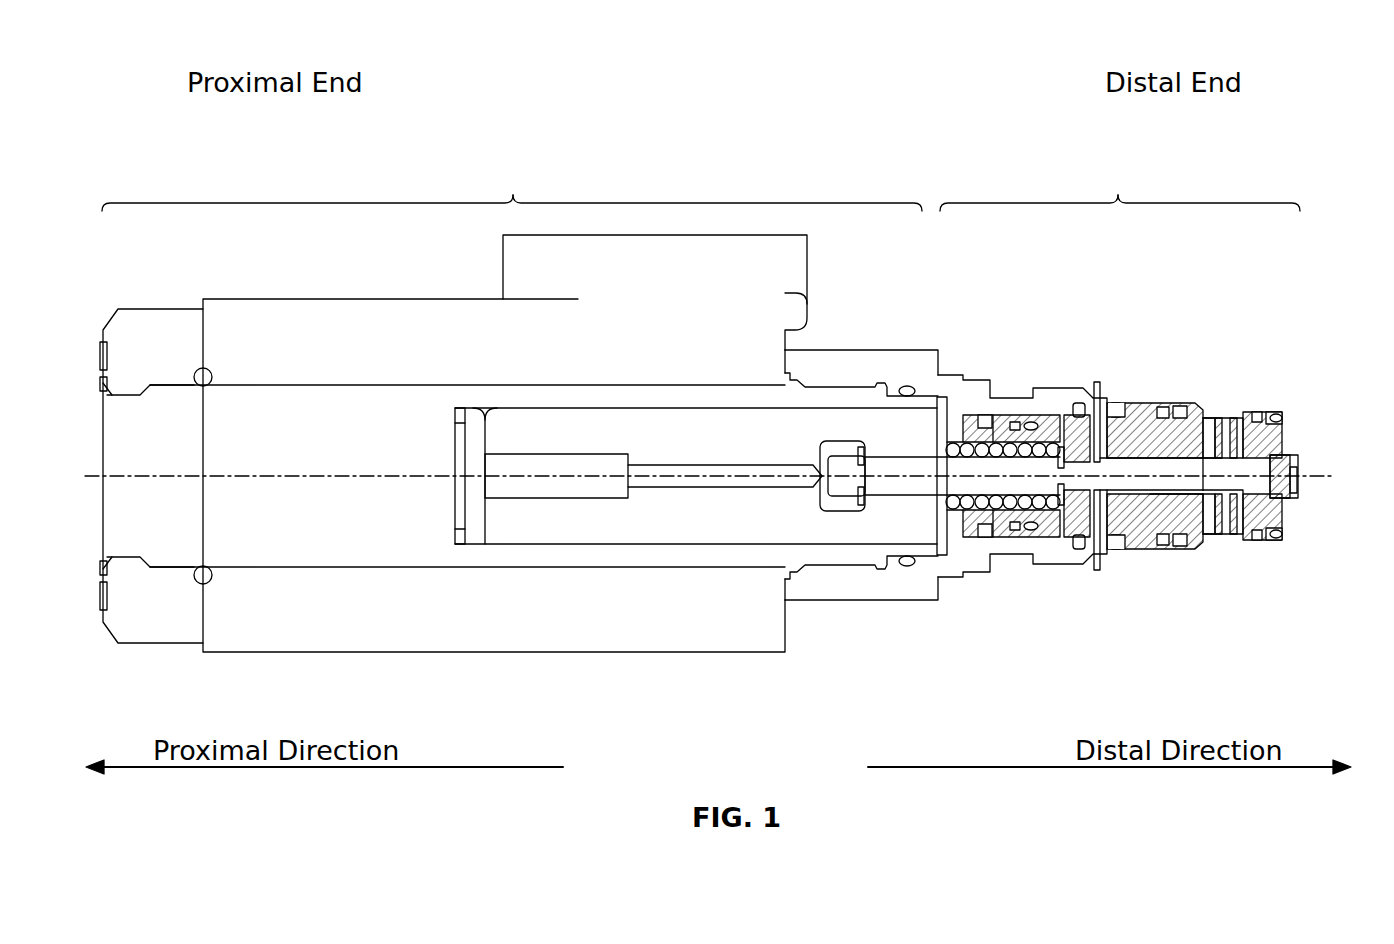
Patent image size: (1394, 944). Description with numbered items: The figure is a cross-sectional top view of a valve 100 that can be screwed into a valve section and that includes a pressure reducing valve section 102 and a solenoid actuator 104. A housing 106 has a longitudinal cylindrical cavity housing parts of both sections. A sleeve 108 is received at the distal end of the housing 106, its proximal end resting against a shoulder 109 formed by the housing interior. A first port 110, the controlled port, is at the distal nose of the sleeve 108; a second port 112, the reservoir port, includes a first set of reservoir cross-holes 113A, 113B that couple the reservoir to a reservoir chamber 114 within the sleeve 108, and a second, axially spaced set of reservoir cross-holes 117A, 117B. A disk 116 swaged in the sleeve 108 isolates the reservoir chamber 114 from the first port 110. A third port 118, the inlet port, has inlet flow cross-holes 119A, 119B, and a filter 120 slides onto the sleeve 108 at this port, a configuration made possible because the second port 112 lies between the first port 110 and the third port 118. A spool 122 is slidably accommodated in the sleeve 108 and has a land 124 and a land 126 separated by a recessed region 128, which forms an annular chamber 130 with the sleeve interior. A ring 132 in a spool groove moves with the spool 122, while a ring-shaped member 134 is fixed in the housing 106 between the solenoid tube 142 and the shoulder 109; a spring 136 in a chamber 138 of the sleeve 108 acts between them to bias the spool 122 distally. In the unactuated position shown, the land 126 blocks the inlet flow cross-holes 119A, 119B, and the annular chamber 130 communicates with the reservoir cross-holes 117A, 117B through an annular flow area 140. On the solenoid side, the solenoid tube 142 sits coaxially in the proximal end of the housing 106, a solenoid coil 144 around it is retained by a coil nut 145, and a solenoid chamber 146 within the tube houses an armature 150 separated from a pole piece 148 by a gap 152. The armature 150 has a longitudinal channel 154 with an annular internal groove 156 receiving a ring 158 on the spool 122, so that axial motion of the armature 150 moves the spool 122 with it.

The valve 100 is at (158, 165).
The pressure reducing valve section 102 is at (1048, 186).
The solenoid actuator 104 is at (455, 186).
The housing 106 is at (904, 349).
The sleeve 108 is at (1155, 402).
The shoulder 109 is at (956, 426).
The first port 110 is at (1304, 484).
The second port 112 is at (1228, 404).
The reservoir cross-hole 113A is at (1256, 410).
The reservoir cross-hole 113B is at (1237, 482).
The reservoir chamber 114 is at (1278, 412).
The disk 116 is at (1294, 464).
The reservoir cross-hole 117A is at (1166, 404).
The reservoir cross-hole 117B is at (1215, 523).
The third port 118 is at (1097, 380).
The inlet flow cross-hole 119A is at (1113, 400).
The inlet flow cross-hole 119B is at (1112, 548).
The filter 120 is at (1078, 548).
The spool 122 is at (1128, 492).
The land 124 is at (1290, 504).
The land 126 is at (1165, 530).
The recessed region 128 is at (1186, 480).
The annular chamber 130 is at (1174, 460).
The ring 132 is at (1060, 446).
The ring-shaped member 134 is at (944, 398).
The spring 136 is at (1010, 506).
The chamber 138 is at (971, 512).
The annular flow area 140 is at (1204, 460).
The solenoid tube 142 is at (826, 392).
The solenoid coil 144 is at (277, 299).
The coil nut 145 is at (168, 307).
The solenoid chamber 146 is at (905, 536).
The pole piece 148 is at (418, 438).
The armature 150 is at (658, 526).
The gap 152 is at (472, 542).
The longitudinal channel 154 is at (737, 490).
The annular internal groove 156 is at (843, 508).
The ring 158 is at (862, 446).